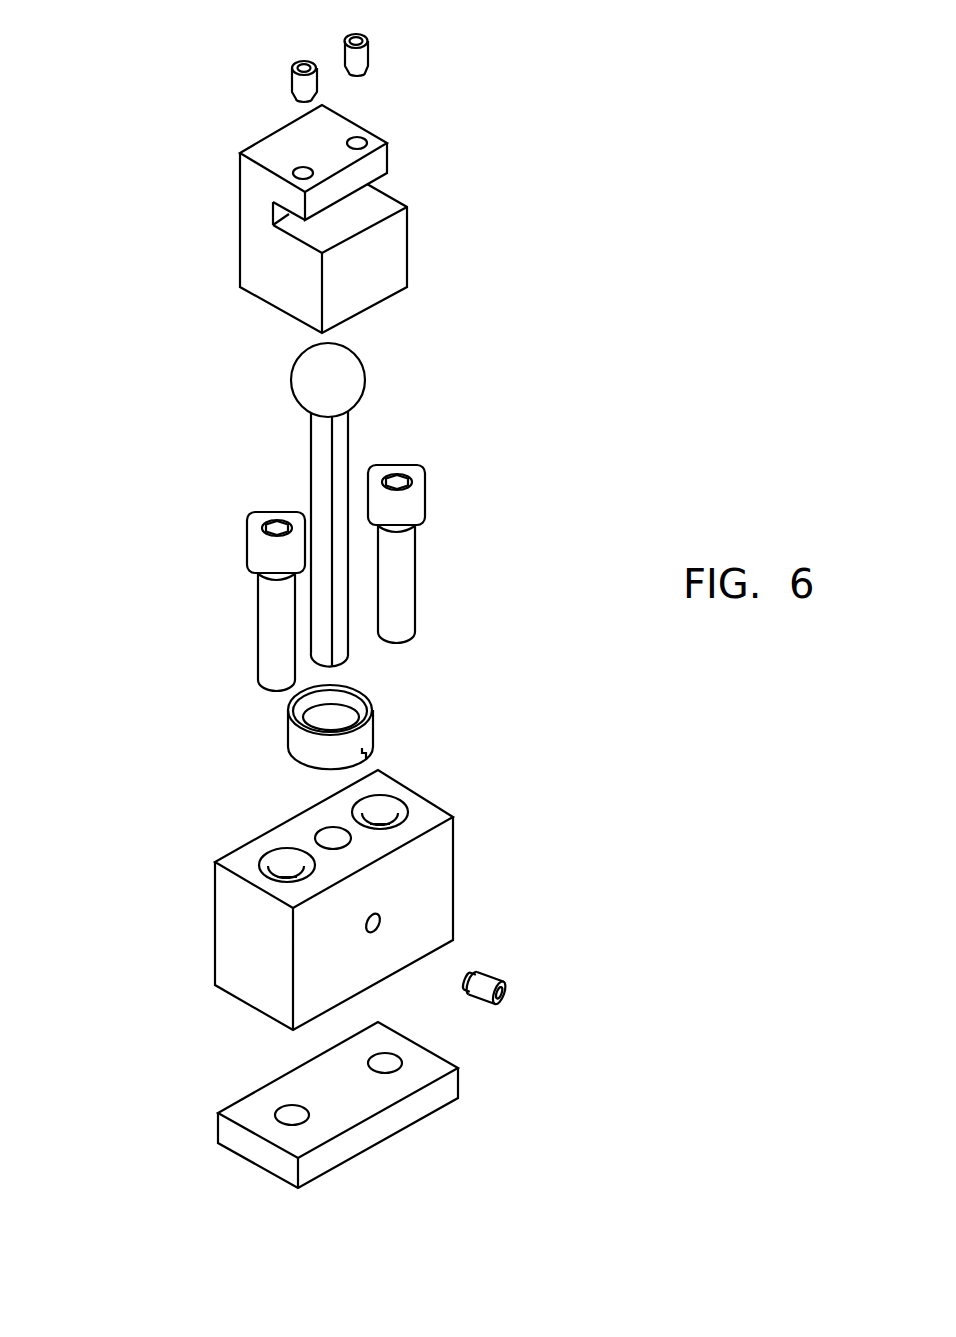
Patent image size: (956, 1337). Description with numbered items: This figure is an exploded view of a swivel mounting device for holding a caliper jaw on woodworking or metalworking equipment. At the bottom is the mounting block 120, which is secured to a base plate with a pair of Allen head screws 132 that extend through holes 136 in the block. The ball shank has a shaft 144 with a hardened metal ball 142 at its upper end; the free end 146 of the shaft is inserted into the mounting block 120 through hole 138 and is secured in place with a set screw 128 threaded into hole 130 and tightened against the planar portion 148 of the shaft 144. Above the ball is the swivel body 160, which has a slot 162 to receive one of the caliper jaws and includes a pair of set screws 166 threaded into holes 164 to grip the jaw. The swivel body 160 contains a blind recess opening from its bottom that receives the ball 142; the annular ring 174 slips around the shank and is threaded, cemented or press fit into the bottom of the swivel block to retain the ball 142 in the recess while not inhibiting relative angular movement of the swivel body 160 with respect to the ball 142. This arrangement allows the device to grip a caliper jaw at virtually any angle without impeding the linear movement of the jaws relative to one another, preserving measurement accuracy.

The mounting block 120 is at (416, 887).
The set screw 128 is at (542, 974).
The hole 130 is at (367, 923).
The Allen head screws 132 is at (277, 618).
The holes 136 is at (380, 810).
The hole 138 is at (322, 839).
The ball 142 is at (310, 378).
The shaft 144 is at (318, 449).
The free end 146 is at (348, 657).
The planar portion 148 is at (340, 433).
The swivel body 160 is at (278, 273).
The slot 162 is at (277, 213).
The holes 164 is at (360, 142).
The set screws 166 is at (358, 57).
The annular ring 174 is at (308, 748).